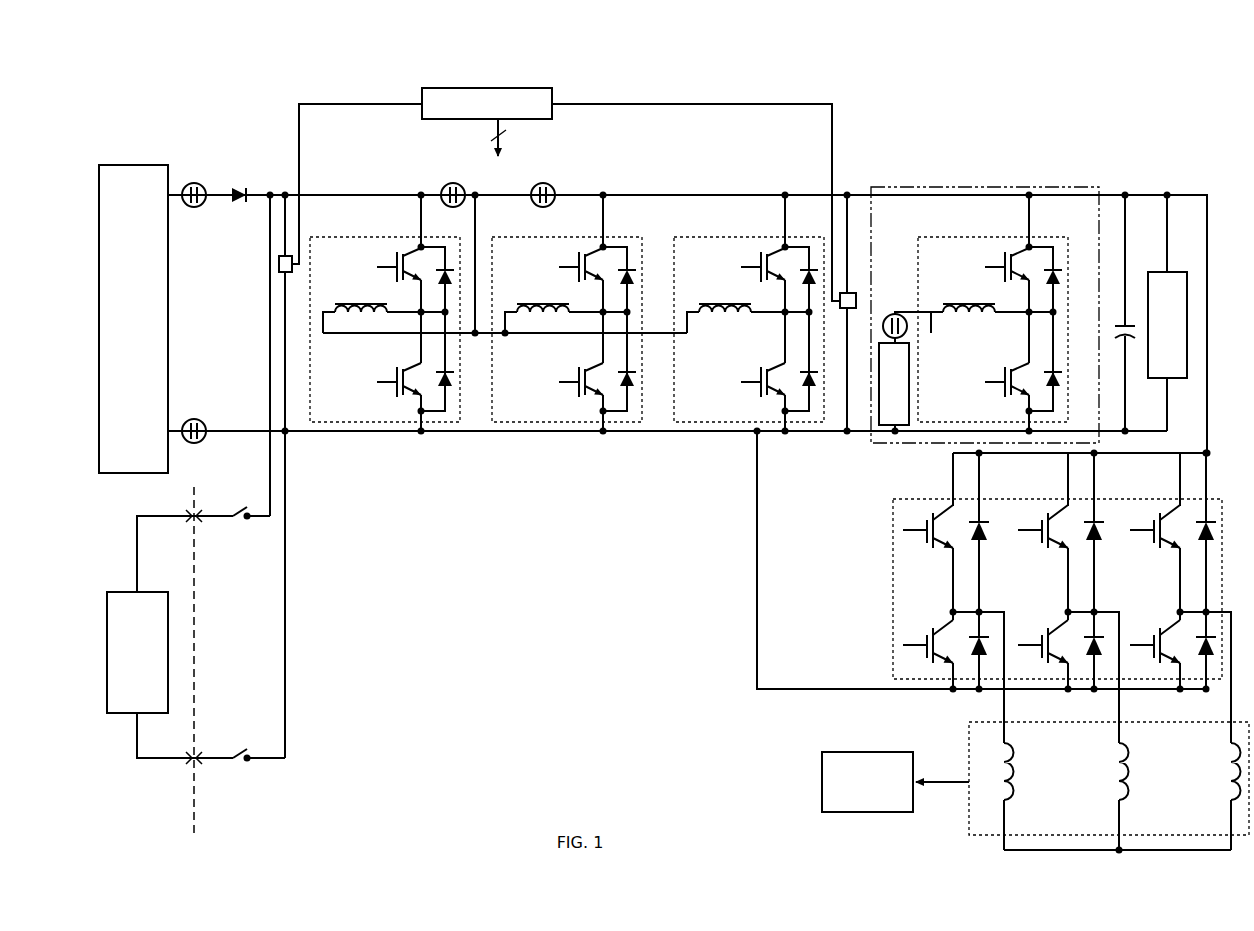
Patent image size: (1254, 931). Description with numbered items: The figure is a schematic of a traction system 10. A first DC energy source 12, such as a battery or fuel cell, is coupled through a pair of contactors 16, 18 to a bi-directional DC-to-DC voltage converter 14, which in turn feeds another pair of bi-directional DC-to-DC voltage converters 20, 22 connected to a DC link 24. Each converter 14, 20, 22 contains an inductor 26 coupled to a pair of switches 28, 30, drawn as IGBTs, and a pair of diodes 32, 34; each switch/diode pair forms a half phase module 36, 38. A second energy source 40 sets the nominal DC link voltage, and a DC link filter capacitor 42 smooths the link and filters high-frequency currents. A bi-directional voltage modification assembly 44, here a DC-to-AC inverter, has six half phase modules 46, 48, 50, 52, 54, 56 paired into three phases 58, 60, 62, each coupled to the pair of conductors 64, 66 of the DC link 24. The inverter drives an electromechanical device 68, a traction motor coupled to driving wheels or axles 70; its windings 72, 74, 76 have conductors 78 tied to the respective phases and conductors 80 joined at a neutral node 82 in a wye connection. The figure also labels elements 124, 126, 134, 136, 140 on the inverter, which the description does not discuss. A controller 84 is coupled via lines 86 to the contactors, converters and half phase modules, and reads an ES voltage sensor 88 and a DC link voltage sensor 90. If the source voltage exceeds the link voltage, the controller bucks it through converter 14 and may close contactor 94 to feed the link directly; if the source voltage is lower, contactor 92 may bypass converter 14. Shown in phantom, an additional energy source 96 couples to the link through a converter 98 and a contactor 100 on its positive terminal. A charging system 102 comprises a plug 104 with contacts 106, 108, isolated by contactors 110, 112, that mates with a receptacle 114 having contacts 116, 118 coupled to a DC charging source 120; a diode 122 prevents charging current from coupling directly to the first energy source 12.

The traction system 10 is at (852, 70).
The first DC energy source 12 is at (131, 165).
The bi-directional DC-to-DC voltage converter 14 is at (365, 238).
The contactor 16 is at (189, 183).
The contactor 18 is at (189, 419).
The bi-directional DC-to-DC voltage converter 20 is at (545, 239).
The bi-directional DC-to-DC voltage converter 22 is at (728, 239).
The DC link 24 is at (686, 193).
The inductor 26 is at (665, 328).
The switch 28 is at (680, 265).
The switch 30 is at (680, 380).
The diode 32 is at (447, 268).
The diode 34 is at (725, 362).
The half phase module 36 is at (664, 283).
The half phase module 38 is at (664, 403).
The second energy source 40 is at (1160, 272).
The DC link filter capacitor 42 is at (1120, 323).
The bi-directional voltage modification assembly 44 is at (894, 501).
The half phase module 46 is at (926, 550).
The half phase module 48 is at (926, 665).
The half phase module 50 is at (1041, 550).
The half phase module 52 is at (1041, 665).
The half phase module 54 is at (1153, 550).
The half phase module 56 is at (1153, 665).
The phase 58 is at (947, 490).
The phase 60 is at (1062, 490).
The phase 62 is at (1174, 490).
The conductor 64 is at (656, 193).
The conductor 66 is at (698, 434).
The electromechanical device 68 is at (968, 752).
The driving wheels or axles 70 is at (822, 777).
The winding 72 is at (1013, 780).
The winding 74 is at (1128, 780).
The winding 76 is at (1230, 768).
The conductor 78 is at (1010, 750).
The conductor 80 is at (1010, 827).
The neutral node 82 is at (1070, 850).
The controller 84 is at (435, 88).
The lines 86 is at (503, 133).
The ES voltage sensor 88 is at (279, 262).
The DC link voltage sensor 90 is at (854, 293).
The contactor 92 is at (446, 184).
The contactor 94 is at (551, 185).
The energy source 96 is at (876, 438).
The bi-directional DC-to-DC voltage converter 98 is at (975, 239).
The contactor 100 is at (885, 316).
The charging system 102 is at (337, 623).
The plug 104 is at (200, 808).
The contact 106 is at (202, 512).
The contact 108 is at (198, 764).
The contactor 110 is at (240, 516).
The contactor 112 is at (240, 758).
The receptacle 114 is at (187, 804).
The contact 116 is at (192, 520).
The contact 118 is at (192, 756).
The DC charging source 120 is at (122, 592).
The diode 122 is at (248, 185).
The diode 124 is at (1101, 535).
The diode 126 is at (1213, 535).
The diode 134 is at (976, 652).
The diode 136 is at (1091, 652).
The diode 140 is at (1203, 652).